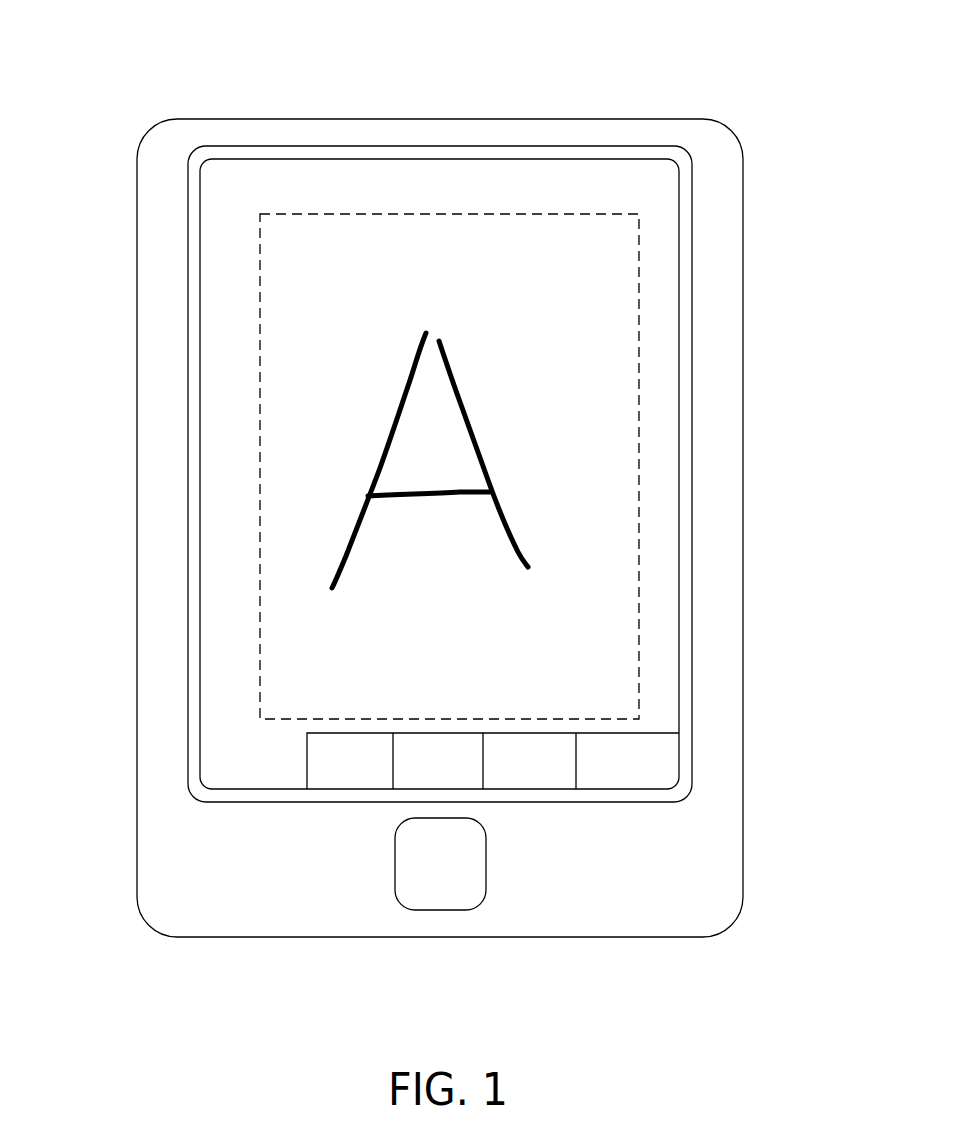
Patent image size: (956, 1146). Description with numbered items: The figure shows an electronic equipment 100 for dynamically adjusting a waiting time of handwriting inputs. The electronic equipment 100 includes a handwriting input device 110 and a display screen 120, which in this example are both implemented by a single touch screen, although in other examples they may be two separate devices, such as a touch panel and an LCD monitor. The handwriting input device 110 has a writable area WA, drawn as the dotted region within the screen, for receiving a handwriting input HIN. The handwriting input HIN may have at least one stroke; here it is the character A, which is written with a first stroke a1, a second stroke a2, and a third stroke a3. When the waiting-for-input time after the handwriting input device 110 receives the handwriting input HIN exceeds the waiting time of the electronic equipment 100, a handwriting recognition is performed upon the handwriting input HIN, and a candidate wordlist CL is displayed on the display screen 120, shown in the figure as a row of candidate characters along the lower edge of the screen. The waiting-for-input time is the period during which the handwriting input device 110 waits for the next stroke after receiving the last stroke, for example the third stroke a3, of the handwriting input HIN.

The electronic equipment 100 is at (440, 119).
The handwriting input device 110 is at (188, 473).
The display screen 120 is at (680, 352).
The writable area WA is at (278, 578).
The handwriting input HIN is at (582, 472).
The first stroke a1 is at (379, 445).
The second stroke a2 is at (491, 448).
The third stroke a3 is at (429, 551).
The candidate wordlist CL is at (665, 762).